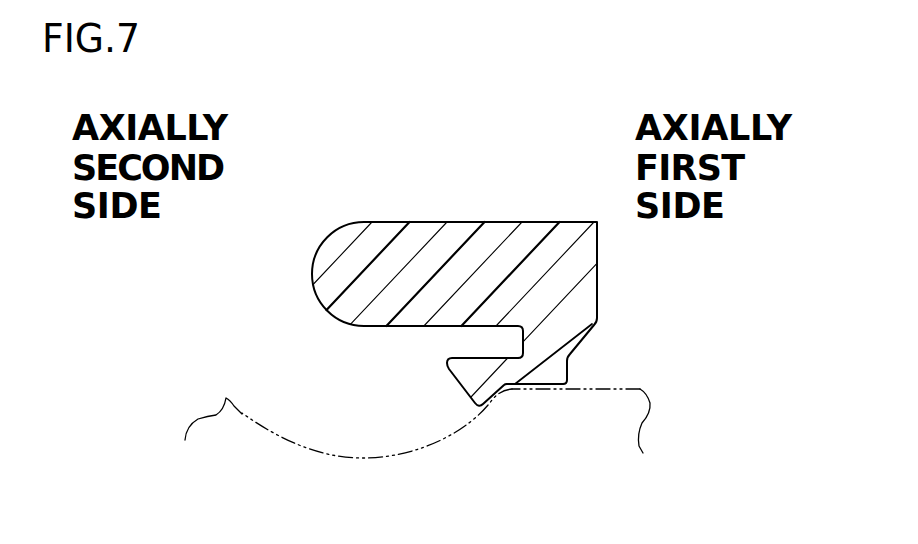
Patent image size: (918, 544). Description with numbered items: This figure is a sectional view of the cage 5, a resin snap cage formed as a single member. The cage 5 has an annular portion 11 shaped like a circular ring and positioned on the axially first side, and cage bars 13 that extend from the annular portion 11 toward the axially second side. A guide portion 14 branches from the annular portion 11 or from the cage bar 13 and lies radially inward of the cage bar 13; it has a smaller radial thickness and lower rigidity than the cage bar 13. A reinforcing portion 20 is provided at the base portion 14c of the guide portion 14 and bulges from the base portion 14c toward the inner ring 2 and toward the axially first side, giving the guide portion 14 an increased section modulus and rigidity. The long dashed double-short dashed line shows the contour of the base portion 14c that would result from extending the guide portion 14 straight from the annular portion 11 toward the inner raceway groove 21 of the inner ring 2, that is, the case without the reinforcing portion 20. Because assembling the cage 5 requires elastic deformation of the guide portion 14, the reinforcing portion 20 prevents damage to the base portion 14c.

The inner ring 2 is at (632, 415).
The cage 5 is at (539, 223).
The annular portion 11 is at (582, 280).
The cage bar 13 is at (408, 240).
The guide portion 14 is at (468, 380).
The base portion 14c is at (551, 341).
The reinforcing portion 20 is at (553, 378).
The inner raceway groove 21 is at (286, 438).